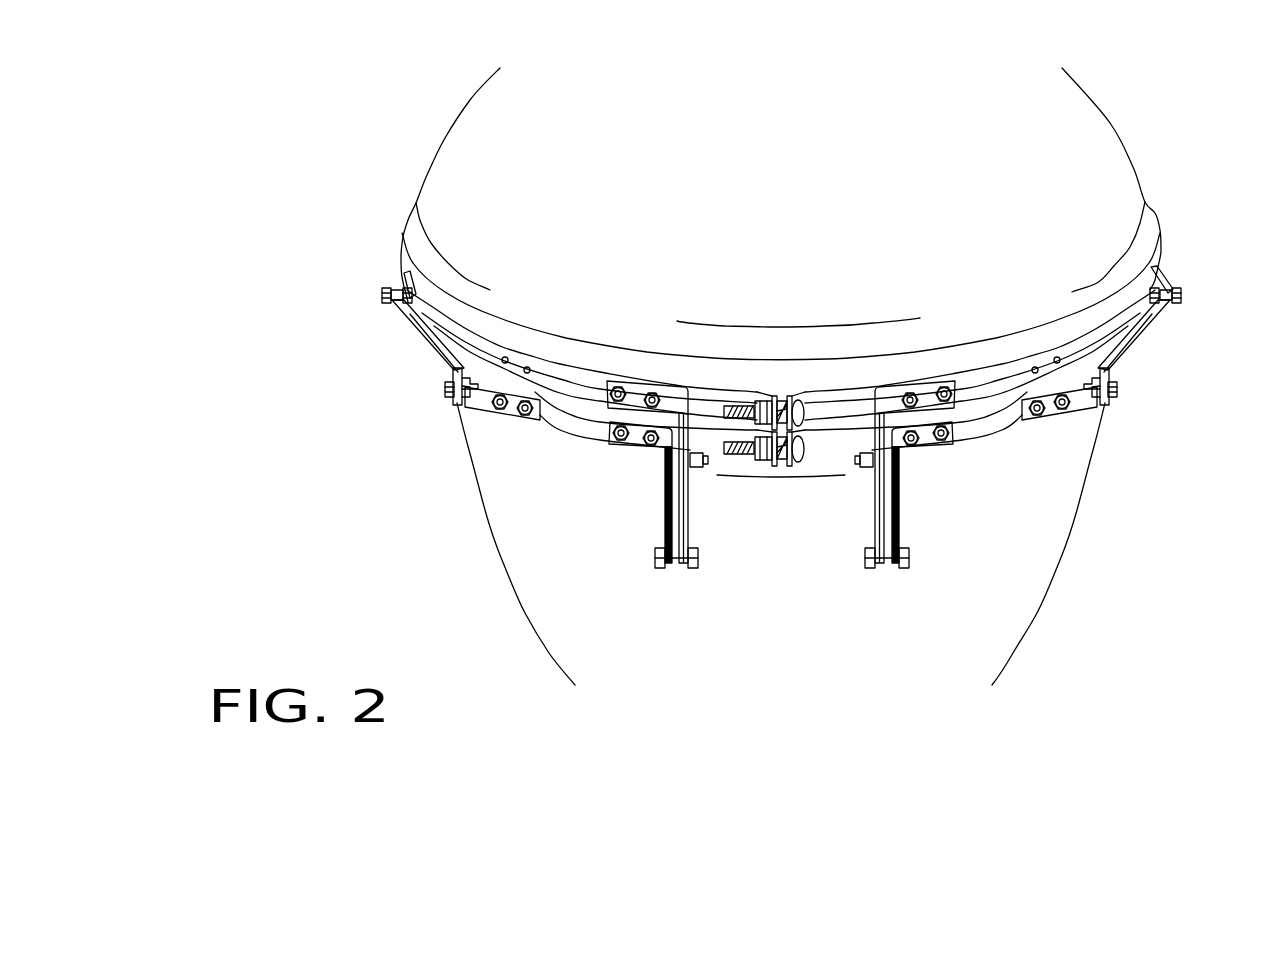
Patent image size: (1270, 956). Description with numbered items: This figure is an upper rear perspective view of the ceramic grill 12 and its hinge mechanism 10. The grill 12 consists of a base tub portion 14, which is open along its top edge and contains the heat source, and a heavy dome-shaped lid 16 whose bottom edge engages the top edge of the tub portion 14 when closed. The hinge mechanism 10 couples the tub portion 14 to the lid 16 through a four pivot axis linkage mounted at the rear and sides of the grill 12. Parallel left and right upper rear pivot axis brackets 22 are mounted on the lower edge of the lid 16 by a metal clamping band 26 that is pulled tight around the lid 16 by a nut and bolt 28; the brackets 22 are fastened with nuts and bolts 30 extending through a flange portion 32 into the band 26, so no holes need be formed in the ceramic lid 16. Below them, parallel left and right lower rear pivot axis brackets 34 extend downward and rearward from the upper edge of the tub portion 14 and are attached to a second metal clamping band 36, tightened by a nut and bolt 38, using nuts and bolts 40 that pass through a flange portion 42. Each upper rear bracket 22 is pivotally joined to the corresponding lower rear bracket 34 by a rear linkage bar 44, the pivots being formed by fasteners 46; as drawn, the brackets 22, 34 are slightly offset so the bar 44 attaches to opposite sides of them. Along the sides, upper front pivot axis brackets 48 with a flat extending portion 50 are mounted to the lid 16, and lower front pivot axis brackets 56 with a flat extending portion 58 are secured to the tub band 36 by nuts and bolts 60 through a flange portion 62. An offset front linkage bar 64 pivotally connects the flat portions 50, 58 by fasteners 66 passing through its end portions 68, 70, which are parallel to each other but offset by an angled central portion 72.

The hinge mechanism 10 is at (773, 628).
The ceramic grill 12 is at (1135, 109).
The base tub portion 14 is at (492, 525).
The lid 16 is at (457, 119).
The upper rear pivot axis brackets 22 is at (684, 392).
The metal clamping band 26 is at (985, 384).
The nut and bolt 28 is at (781, 398).
The nuts and bolts 30 is at (617, 386).
The flange portion 32 is at (921, 391).
The lower rear pivot axis brackets 34 is at (666, 511).
The metal clamping band 36 is at (987, 423).
The nut and bolt 38 is at (777, 463).
The nuts and bolts 40 is at (622, 443).
The flange portion 42 is at (928, 440).
The rear linkage bar 44 is at (683, 502).
The fasteners 46 is at (658, 570).
The upper front pivot axis brackets 48 is at (403, 279).
The flat extending portion 50 is at (384, 290).
The lower front pivot axis brackets 56 is at (463, 410).
The flat extending portion 58 is at (458, 408).
The nuts and bolts 60 is at (526, 428).
The flange portion 62 is at (522, 437).
The offset front linkage bar 64 is at (432, 378).
The fasteners 66 is at (1177, 298).
The end portion 68 is at (410, 293).
The end portion 70 is at (453, 377).
The central portion 72 is at (408, 326).